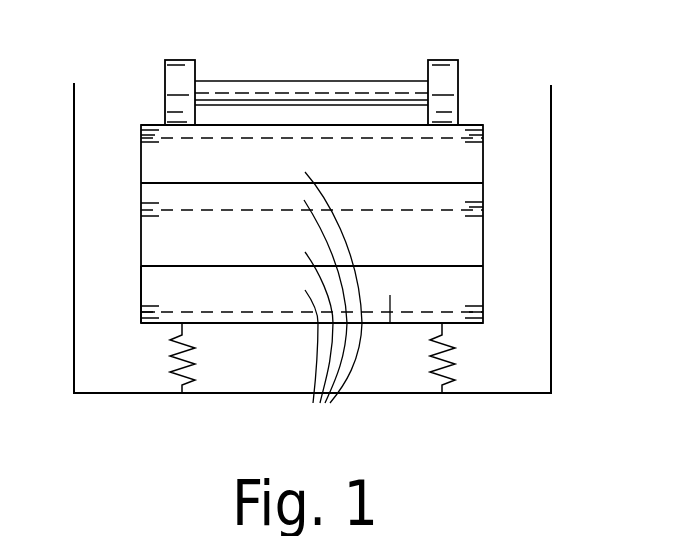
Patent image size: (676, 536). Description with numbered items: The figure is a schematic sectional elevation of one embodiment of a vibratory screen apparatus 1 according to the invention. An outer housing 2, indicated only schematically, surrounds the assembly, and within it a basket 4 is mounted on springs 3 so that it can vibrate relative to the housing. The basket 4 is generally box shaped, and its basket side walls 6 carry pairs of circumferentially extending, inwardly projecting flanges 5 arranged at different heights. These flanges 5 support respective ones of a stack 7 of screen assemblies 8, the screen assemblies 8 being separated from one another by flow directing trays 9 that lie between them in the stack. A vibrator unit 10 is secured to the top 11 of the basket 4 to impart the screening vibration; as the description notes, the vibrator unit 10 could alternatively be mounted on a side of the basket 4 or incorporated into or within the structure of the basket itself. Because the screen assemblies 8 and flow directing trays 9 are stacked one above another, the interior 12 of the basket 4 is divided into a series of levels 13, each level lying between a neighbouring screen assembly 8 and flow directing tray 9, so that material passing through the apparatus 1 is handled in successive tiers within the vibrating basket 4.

The vibratory screen apparatus 1 is at (551, 133).
The outer housing 2 is at (551, 243).
The springs 3 is at (447, 377).
The basket 4 is at (483, 287).
The flanges 5 is at (483, 216).
The basket side walls 6 is at (141, 285).
The stack 7 is at (229, 319).
The screen assemblies 8 is at (177, 212).
The flow directing trays 9 is at (157, 182).
The vibrator unit 10 is at (458, 80).
The top of the basket 11 is at (472, 125).
The interior of the basket 12 is at (390, 323).
The levels 13 is at (329, 310).